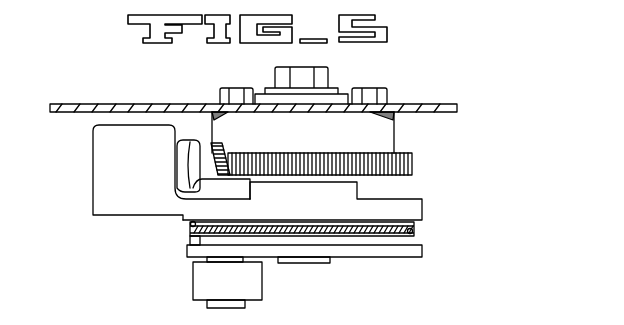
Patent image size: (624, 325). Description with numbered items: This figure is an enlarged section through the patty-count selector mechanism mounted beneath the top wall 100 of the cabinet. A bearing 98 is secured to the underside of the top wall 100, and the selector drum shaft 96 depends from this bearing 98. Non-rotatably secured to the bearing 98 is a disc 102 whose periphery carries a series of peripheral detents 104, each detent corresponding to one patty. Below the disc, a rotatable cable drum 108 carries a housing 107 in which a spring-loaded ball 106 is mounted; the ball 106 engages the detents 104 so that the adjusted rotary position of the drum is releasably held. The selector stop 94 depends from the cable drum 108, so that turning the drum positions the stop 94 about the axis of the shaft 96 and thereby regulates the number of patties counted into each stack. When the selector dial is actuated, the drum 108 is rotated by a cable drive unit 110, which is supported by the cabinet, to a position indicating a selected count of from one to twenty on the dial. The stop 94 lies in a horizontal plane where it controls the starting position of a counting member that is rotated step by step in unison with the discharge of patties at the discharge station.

The selector stop 94 is at (198, 282).
The selector drum shaft 96 is at (325, 264).
The bearing 98 is at (381, 138).
The top wall 100 is at (428, 106).
The disc 102 is at (413, 165).
The peripheral detents 104 is at (333, 158).
The spring-loaded ball 106 is at (205, 190).
The housing 107 is at (93, 168).
The cable drum 108 is at (412, 211).
The cable drive unit 110 is at (416, 228).